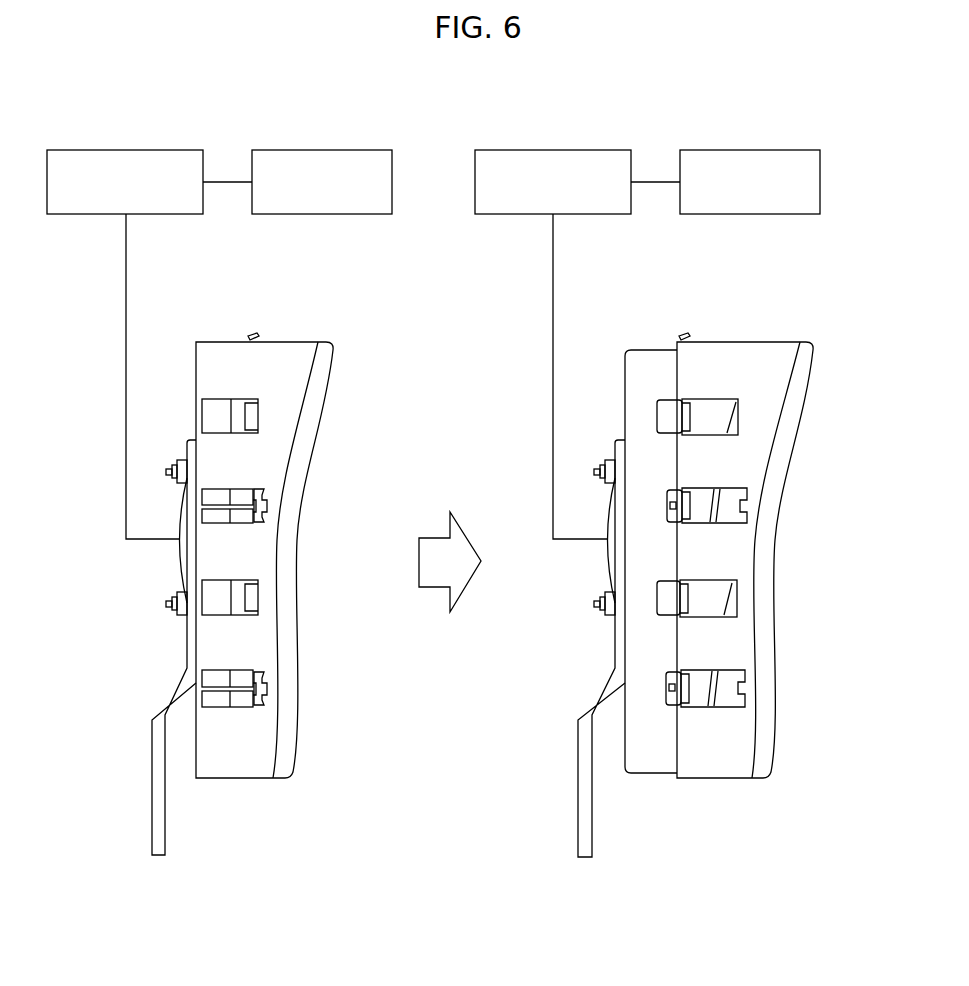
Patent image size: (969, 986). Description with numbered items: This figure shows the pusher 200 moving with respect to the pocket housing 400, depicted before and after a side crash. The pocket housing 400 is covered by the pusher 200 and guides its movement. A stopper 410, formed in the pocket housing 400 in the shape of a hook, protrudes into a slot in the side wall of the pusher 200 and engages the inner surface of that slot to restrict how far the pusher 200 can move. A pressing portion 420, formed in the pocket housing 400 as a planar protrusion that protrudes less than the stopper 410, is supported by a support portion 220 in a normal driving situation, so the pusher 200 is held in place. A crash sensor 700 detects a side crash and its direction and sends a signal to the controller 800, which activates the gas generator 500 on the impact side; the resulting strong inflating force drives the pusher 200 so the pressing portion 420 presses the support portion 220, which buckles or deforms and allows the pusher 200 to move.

The pusher 200 is at (310, 413).
The support portion 220 is at (219, 505).
The pocket housing 400 is at (656, 760).
The stopper 410 is at (257, 423).
The pressing portion 420 is at (266, 507).
The gas generator 500 is at (180, 556).
The crash sensor 700 is at (323, 150).
The controller 800 is at (126, 150).